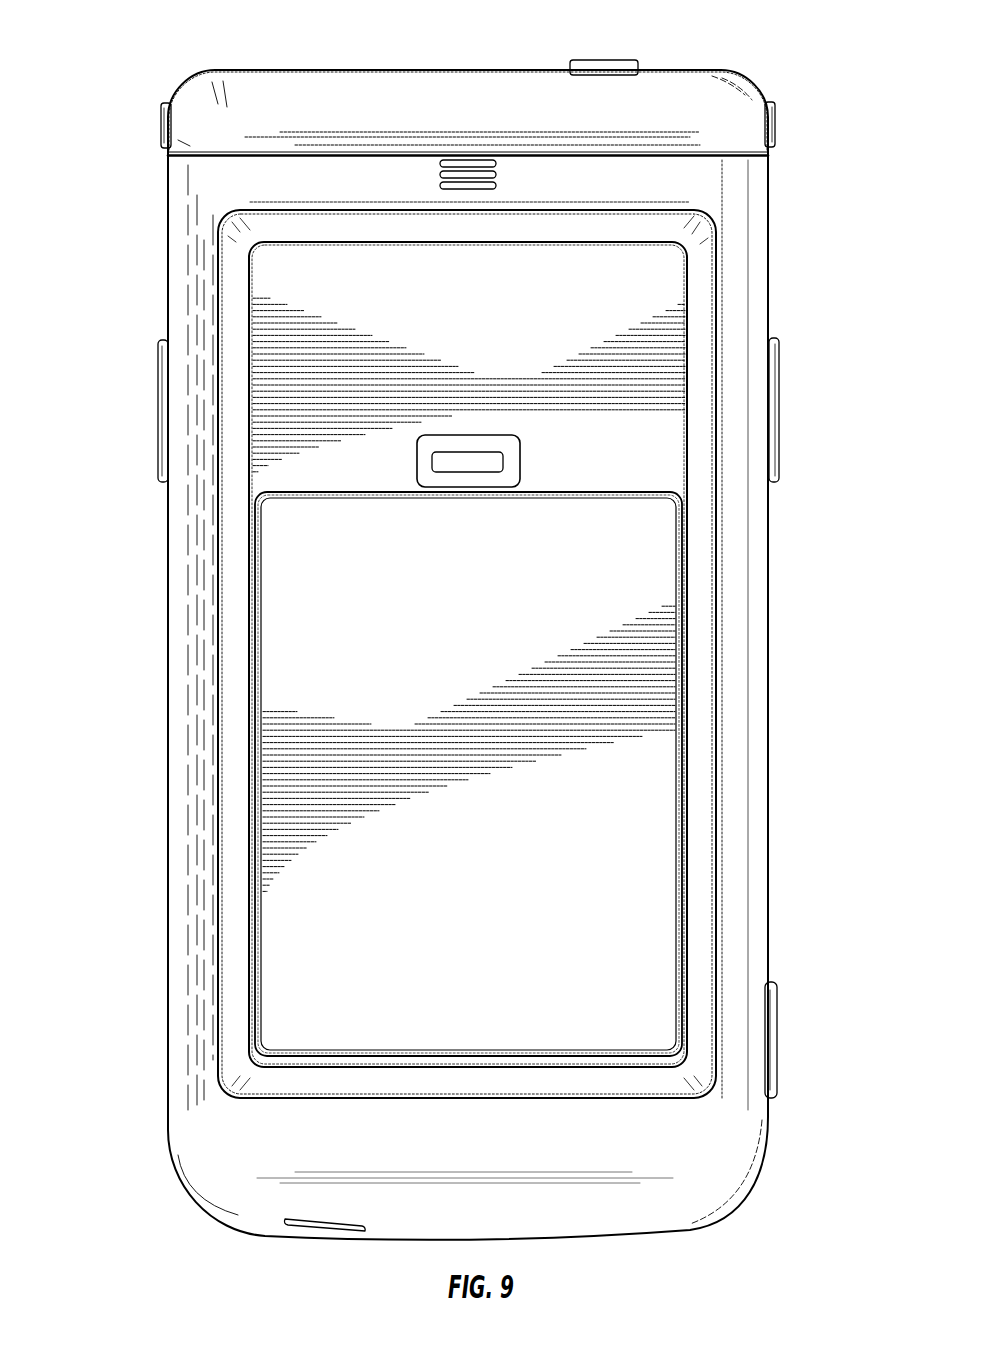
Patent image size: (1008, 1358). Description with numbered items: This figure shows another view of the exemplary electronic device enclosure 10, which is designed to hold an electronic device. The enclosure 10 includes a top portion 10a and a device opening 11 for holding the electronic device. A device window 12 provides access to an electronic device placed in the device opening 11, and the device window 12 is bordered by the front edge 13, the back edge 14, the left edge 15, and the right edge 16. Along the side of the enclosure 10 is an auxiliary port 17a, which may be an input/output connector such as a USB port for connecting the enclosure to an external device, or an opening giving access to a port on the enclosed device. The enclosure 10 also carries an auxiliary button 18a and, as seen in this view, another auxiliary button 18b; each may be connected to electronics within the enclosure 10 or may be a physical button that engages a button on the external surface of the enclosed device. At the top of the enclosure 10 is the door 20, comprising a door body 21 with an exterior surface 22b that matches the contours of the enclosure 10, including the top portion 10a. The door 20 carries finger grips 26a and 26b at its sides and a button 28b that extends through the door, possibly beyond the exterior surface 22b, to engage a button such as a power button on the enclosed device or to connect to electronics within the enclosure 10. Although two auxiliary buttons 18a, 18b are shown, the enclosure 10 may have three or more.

The enclosure 10 is at (786, 88).
The top portion 10a is at (728, 1165).
The device opening 11 is at (282, 997).
The device window 12 is at (271, 828).
The front edge 13 is at (412, 172).
The back edge 14 is at (403, 1200).
The left edge 15 is at (204, 625).
The right edge 16 is at (733, 755).
The auxiliary port 17a is at (772, 1035).
The auxiliary button 18a is at (772, 385).
The auxiliary button 18b is at (163, 427).
The door 20 is at (238, 85).
The door body 21 is at (312, 90).
The exterior surface 22b is at (732, 85).
The finger grip 26a is at (772, 115).
The finger grip 26b is at (166, 128).
The button 28b is at (606, 62).